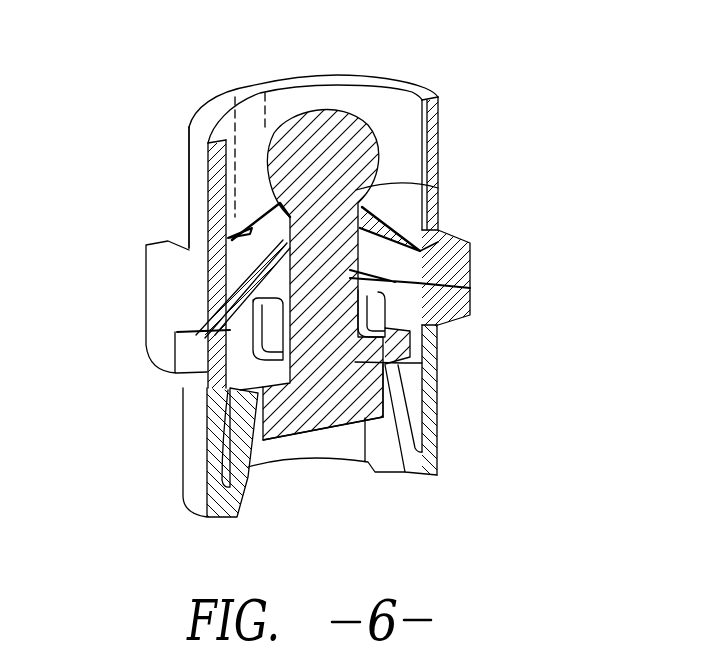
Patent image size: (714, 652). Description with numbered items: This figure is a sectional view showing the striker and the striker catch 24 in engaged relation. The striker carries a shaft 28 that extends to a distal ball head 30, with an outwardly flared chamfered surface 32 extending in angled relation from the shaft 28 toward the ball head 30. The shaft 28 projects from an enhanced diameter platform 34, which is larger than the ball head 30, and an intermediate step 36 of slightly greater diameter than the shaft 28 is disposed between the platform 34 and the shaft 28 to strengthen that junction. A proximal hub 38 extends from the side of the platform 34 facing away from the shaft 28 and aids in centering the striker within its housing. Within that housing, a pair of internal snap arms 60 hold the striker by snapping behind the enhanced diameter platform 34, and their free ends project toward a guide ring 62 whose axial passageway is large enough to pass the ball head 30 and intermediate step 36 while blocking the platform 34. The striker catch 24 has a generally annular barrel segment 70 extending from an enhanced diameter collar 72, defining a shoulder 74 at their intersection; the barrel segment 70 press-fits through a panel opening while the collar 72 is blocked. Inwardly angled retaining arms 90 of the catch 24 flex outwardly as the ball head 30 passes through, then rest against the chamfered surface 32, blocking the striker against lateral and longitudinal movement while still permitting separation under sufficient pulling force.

The striker catch 24 is at (381, 75).
The shaft 28 is at (435, 312).
The distal ball head 30 is at (330, 110).
The chamfered surface 32 is at (425, 176).
The enhanced diameter platform 34 is at (440, 345).
The intermediate step 36 is at (412, 340).
The proximal hub 38 is at (320, 433).
The internal snap arms 60 is at (243, 487).
The guide ring 62 is at (262, 326).
The barrel segment 70 is at (250, 83).
The enhanced diameter collar 72 is at (472, 260).
The shoulder 74 is at (158, 262).
The retaining arms 90 is at (249, 232).